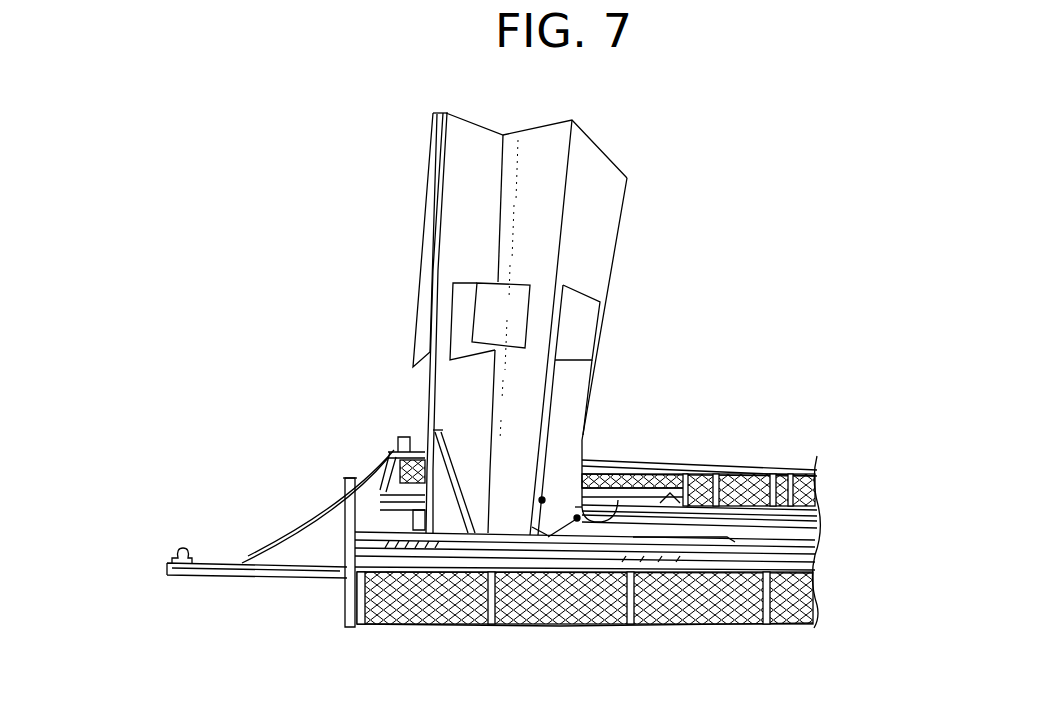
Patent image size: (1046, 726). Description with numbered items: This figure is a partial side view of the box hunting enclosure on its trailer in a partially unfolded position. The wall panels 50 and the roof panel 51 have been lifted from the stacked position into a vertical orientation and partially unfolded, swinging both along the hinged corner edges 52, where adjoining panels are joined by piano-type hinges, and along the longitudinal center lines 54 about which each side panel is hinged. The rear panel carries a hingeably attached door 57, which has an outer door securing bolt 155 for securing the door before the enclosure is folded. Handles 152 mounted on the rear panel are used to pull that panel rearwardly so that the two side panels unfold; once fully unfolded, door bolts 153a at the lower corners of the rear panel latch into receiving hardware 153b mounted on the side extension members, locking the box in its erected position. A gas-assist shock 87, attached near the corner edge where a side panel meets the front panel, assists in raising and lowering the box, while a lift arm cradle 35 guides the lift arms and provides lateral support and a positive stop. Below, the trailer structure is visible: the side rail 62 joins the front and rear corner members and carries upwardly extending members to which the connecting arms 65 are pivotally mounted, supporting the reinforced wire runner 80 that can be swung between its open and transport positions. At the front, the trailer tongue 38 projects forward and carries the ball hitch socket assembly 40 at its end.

The lift arm cradle 35 is at (727, 540).
The trailer tongue 38 is at (216, 560).
The ball hitch socket assembly 40 is at (182, 548).
The wall panel 50 is at (607, 209).
The roof panel 51 is at (425, 264).
The longitudinal outer edge 52 is at (567, 163).
The longitudinal center line 54 is at (502, 170).
The door 57 is at (570, 377).
The side rail 62 is at (806, 547).
The connecting arm 65 is at (343, 542).
The wire runner 80 is at (350, 604).
The gas-assist shock 87 is at (465, 485).
The handle 152 is at (548, 540).
The door bolt 153a is at (598, 522).
The receiving hardware 153b is at (670, 493).
The outer door securing bolt 155 is at (540, 502).